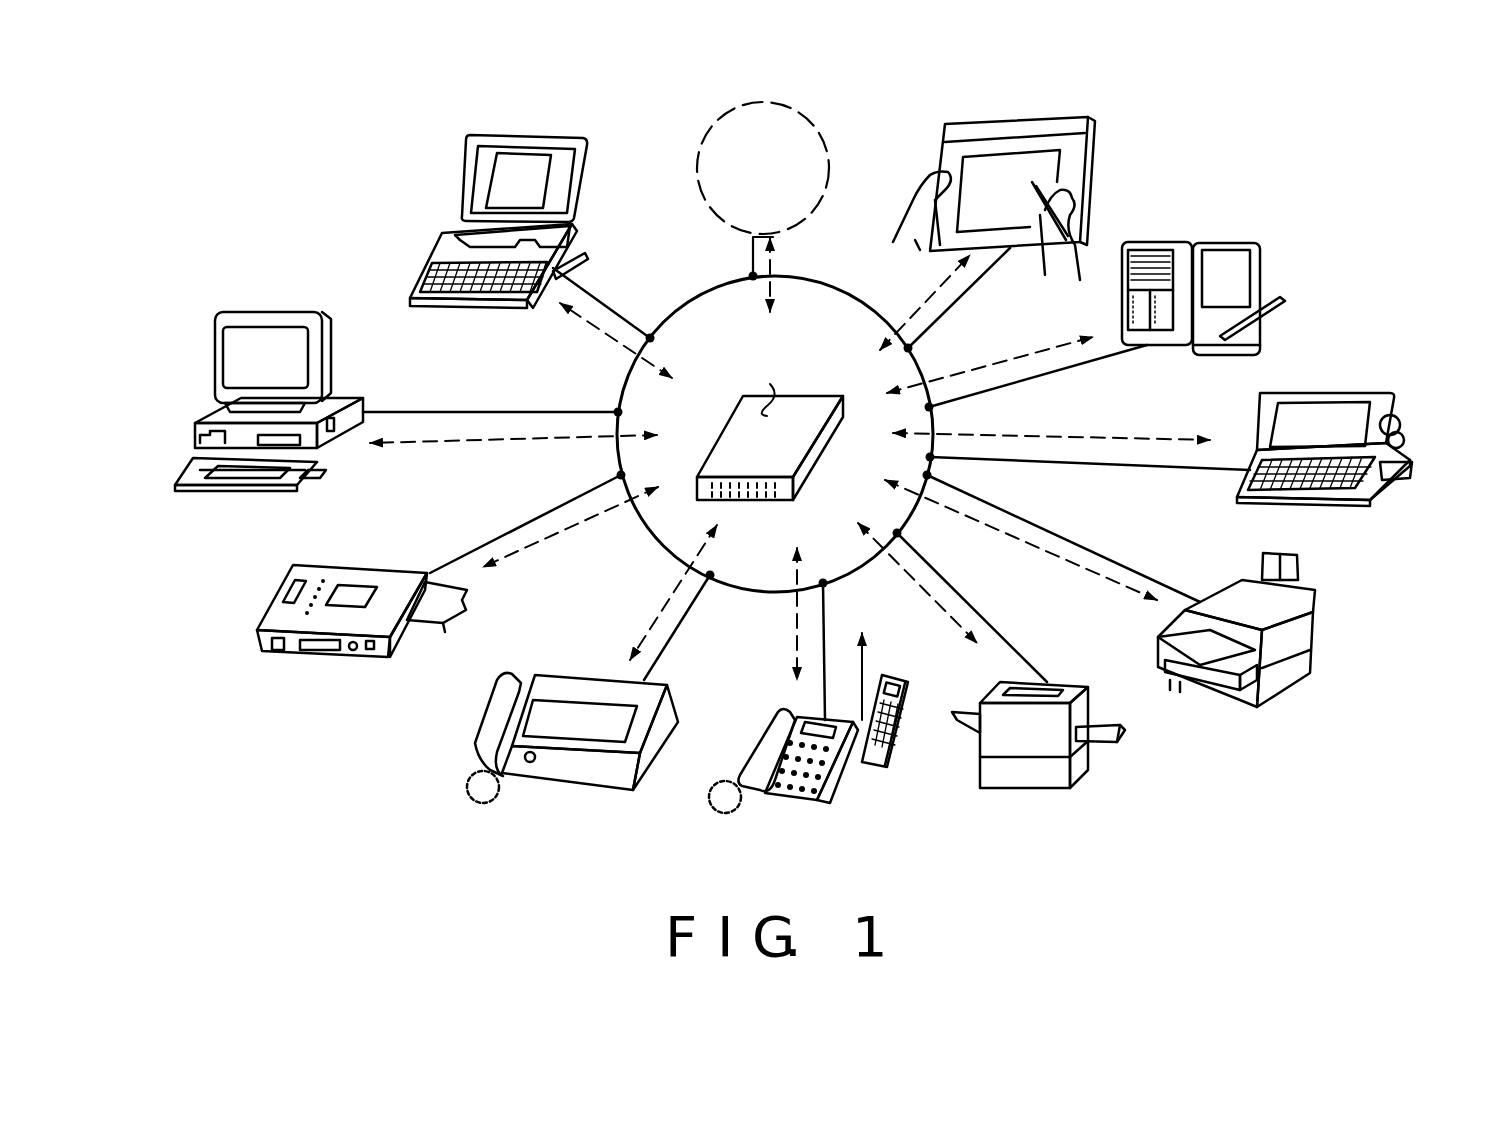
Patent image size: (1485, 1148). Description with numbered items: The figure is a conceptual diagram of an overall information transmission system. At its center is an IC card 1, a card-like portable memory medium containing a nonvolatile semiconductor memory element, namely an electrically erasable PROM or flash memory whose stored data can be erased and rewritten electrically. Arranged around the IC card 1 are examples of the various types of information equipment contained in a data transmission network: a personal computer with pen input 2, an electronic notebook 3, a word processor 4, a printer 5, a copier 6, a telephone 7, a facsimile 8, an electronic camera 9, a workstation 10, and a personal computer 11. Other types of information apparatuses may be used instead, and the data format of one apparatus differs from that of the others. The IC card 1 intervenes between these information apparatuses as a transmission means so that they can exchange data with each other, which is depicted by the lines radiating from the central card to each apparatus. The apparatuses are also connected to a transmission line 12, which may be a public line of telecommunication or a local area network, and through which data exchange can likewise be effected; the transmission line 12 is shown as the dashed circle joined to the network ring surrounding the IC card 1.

The IC card 1 is at (807, 443).
The personal computer with pen input 2 is at (1100, 150).
The electronic notebook 3 is at (1272, 265).
The word processor 4 is at (1400, 407).
The printer 5 is at (1323, 626).
The copier 6 is at (1033, 792).
The telephone 7 is at (860, 783).
The facsimile 8 is at (577, 796).
The electronic camera 9 is at (265, 607).
The personal computer 10 is at (277, 307).
The personal computer 11 is at (447, 175).
The transmission line 12 is at (745, 592).